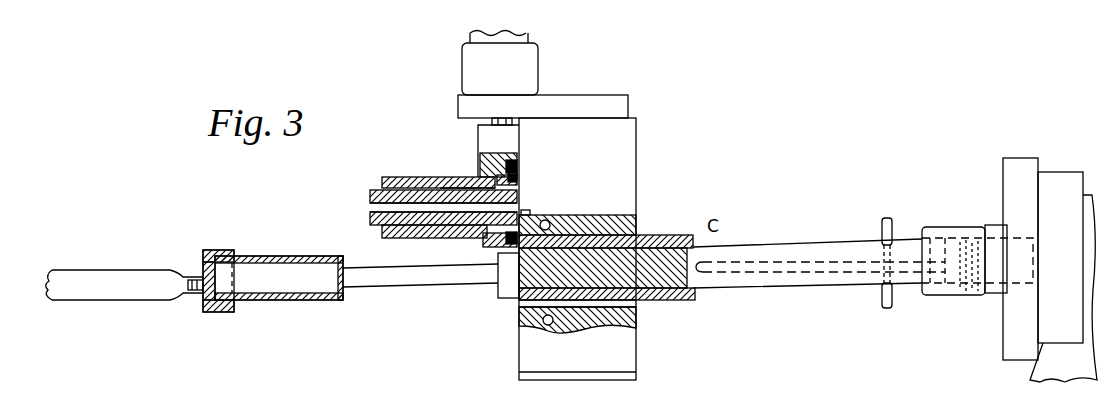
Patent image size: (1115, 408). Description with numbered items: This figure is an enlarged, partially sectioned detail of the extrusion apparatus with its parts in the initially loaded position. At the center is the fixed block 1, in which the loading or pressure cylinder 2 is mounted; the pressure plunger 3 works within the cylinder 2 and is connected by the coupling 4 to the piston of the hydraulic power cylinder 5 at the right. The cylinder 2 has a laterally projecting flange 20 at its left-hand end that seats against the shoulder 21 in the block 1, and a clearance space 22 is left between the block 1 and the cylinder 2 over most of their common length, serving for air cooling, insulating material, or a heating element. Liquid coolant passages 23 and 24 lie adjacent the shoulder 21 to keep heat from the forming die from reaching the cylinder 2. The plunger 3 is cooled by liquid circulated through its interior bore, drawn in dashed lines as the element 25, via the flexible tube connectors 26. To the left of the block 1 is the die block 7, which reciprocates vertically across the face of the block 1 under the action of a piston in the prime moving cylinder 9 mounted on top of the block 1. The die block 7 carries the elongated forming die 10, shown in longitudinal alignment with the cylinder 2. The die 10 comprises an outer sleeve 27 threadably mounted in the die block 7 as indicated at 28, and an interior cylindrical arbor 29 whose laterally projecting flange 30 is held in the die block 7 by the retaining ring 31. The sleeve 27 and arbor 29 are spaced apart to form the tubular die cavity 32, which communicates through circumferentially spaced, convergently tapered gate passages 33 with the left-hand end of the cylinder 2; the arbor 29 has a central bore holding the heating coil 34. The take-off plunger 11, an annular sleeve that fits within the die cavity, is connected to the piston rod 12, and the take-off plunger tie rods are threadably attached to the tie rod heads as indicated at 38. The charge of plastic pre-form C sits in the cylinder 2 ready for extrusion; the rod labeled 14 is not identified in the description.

The fixed block 1 is at (587, 248).
The pressure cylinder 2 is at (661, 241).
The pressure plunger 3 is at (755, 250).
The coupling 4 is at (941, 227).
The hydraulic power cylinder 5 is at (1063, 277).
The die block 7 is at (478, 136).
The prime moving cylinder 9 is at (530, 34).
The forming die 10 is at (455, 196).
The take-off plunger 11 is at (276, 257).
The piston rod 12 is at (127, 299).
The coupling rod 14 is at (218, 251).
The laterally projecting flange 20 is at (520, 307).
The shoulder 21 is at (522, 334).
The clearance space 22 is at (637, 234).
The liquid coolant passage 23 is at (550, 222).
The liquid coolant passage 24 is at (556, 326).
The inner rod 25 is at (814, 252).
The flexible tube connectors 26 is at (892, 223).
The outer sleeve 27 is at (422, 177).
The threaded mounting 28 is at (483, 241).
The cylindrical arbor 29 is at (405, 192).
The laterally projecting flange 30 is at (508, 165).
The retaining ring 31 is at (516, 182).
The tubular die cavity 32 is at (457, 178).
The gate passages 33 is at (520, 200).
The heating coil 34 is at (403, 208).
The threaded attachment 38 is at (498, 292).